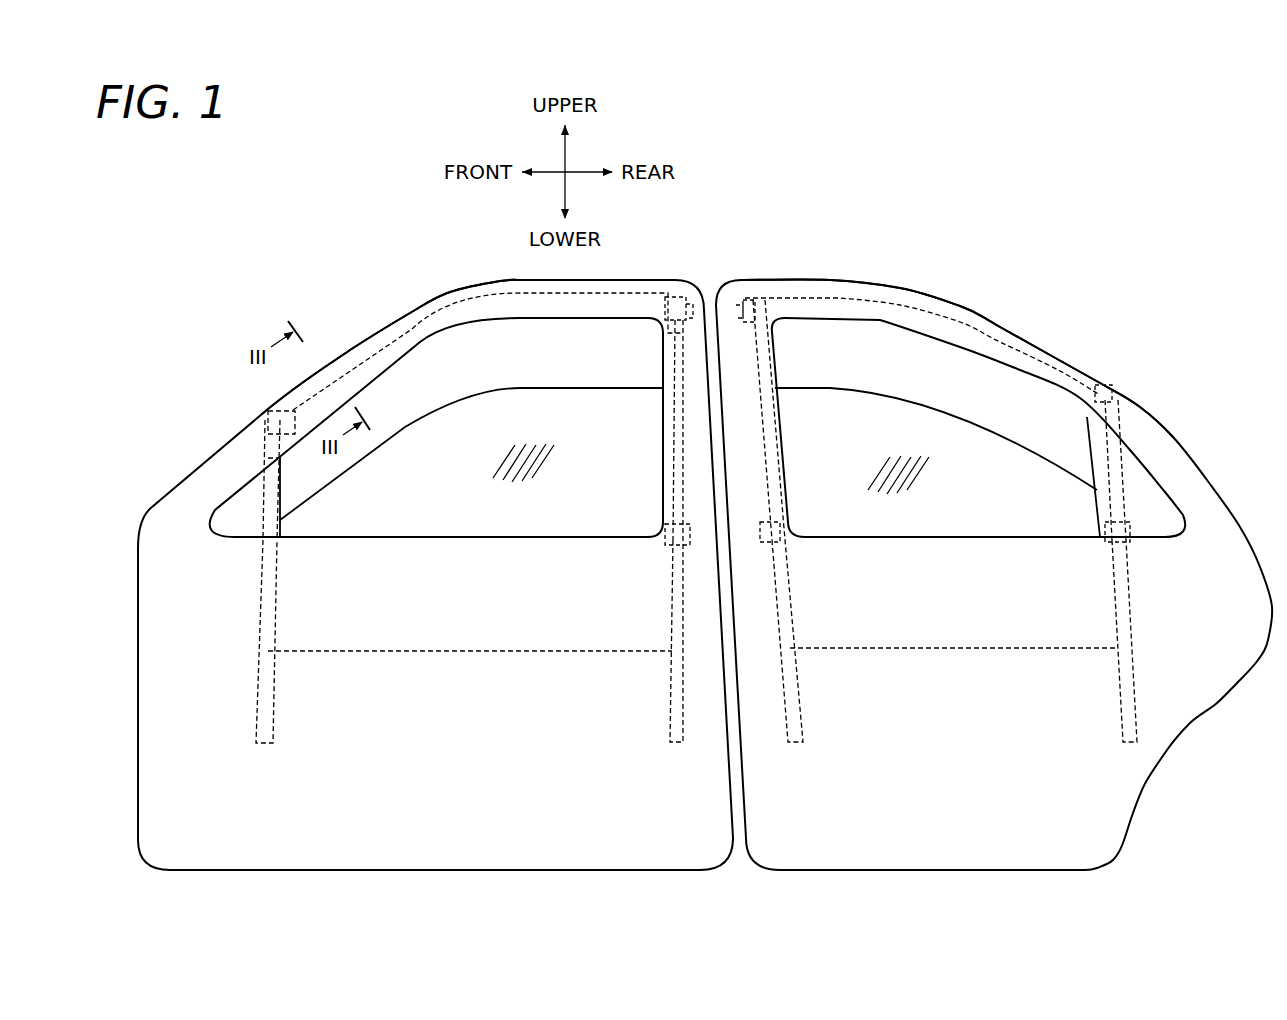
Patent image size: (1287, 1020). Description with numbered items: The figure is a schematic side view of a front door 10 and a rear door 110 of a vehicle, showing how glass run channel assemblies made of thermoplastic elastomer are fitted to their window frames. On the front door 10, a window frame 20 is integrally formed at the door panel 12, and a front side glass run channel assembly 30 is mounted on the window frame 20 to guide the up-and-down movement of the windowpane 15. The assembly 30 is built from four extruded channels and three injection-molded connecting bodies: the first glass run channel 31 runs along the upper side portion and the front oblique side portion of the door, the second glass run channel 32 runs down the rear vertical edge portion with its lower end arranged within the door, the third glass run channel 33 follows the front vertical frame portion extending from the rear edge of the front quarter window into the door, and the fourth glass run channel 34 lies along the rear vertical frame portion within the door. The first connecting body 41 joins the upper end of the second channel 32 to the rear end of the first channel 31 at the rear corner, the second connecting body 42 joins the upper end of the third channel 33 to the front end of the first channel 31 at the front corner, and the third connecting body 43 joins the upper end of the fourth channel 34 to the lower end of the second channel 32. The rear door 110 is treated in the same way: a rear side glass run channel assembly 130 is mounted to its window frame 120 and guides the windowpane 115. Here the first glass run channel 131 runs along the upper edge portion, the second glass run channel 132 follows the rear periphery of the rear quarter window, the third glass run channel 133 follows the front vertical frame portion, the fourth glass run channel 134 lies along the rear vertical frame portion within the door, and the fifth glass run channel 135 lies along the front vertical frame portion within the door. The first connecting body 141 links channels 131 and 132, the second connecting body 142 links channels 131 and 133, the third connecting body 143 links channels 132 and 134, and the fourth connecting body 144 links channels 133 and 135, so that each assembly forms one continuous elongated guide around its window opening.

The front door 10 is at (203, 434).
The door panel 12 is at (146, 590).
The windowpane 15 is at (546, 386).
The window frame 20 is at (467, 314).
The front side glass run channel assembly 30 is at (344, 350).
The first glass run channel 31 is at (413, 322).
The second glass run channel 32 is at (672, 462).
The third glass run channel 33 is at (257, 683).
The fourth glass run channel 34 is at (668, 690).
The first connecting body 41 is at (665, 298).
The second connecting body 42 is at (268, 426).
The third connecting body 43 is at (665, 540).
The rear door 110 is at (1180, 419).
The windowpane 115 is at (921, 396).
The window frame 120 is at (1026, 373).
The rear side glass run channel assembly 130 is at (994, 321).
The first glass run channel 131 is at (869, 297).
The second glass run channel 132 is at (1117, 470).
The third glass run channel 133 is at (771, 363).
The fourth glass run channel 134 is at (1118, 698).
The fifth glass run channel 135 is at (800, 706).
The first connecting body 141 is at (1102, 384).
The second connecting body 142 is at (774, 300).
The third connecting body 143 is at (1105, 544).
The fourth connecting body 144 is at (782, 542).